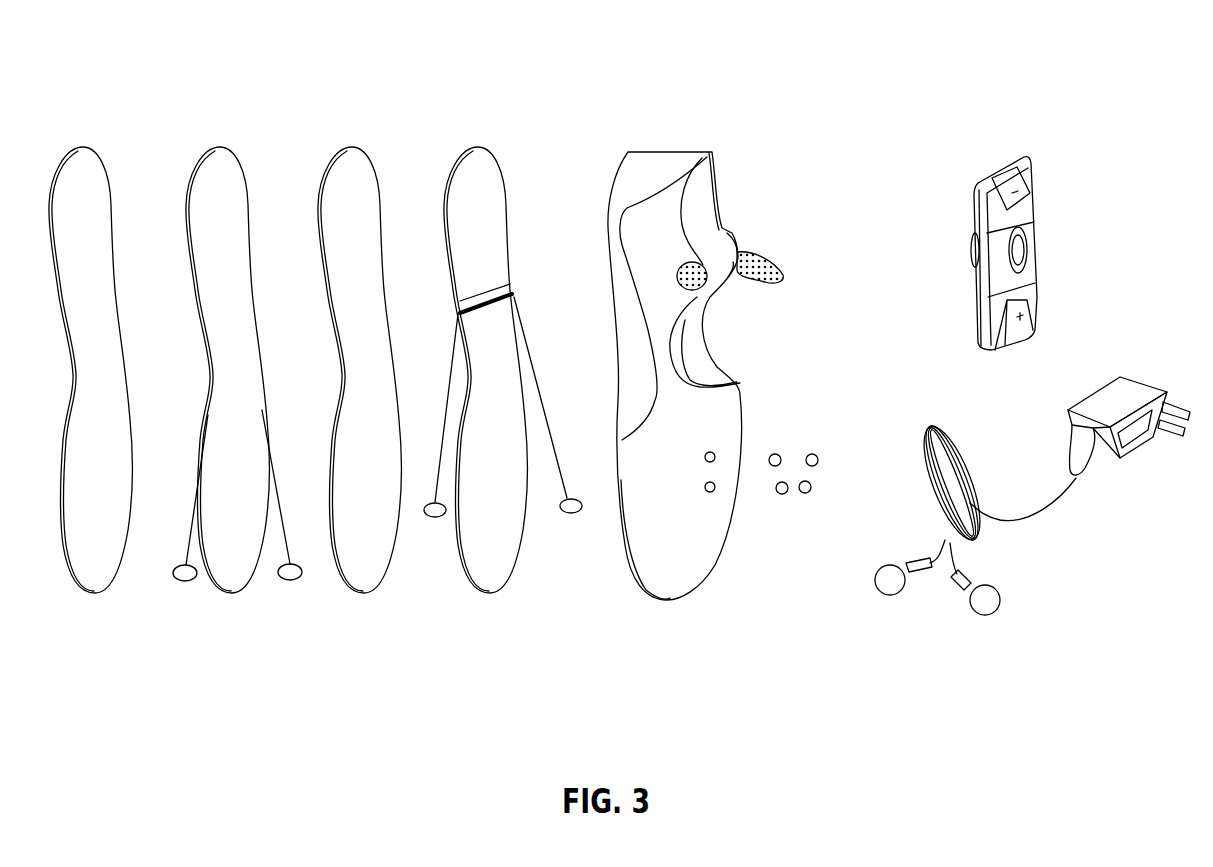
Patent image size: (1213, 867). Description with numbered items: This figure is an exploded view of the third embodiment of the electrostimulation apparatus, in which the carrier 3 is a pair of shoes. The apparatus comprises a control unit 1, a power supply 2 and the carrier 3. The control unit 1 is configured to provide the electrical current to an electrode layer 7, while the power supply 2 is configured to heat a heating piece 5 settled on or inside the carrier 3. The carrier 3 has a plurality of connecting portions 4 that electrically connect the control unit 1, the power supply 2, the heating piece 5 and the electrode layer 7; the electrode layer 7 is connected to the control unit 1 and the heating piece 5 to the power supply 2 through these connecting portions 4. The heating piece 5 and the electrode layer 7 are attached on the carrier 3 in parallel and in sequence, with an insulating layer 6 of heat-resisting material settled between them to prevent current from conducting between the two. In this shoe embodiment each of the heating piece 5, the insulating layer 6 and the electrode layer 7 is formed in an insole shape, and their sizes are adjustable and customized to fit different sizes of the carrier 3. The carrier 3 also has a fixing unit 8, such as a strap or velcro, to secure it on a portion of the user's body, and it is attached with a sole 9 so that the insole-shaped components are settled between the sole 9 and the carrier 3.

The control unit 1 is at (1023, 148).
The power supply 2 is at (1138, 383).
The carrier 3 is at (668, 147).
The connecting portions 4 is at (795, 447).
The heating piece 5 is at (225, 137).
The insulating layer 6 is at (350, 137).
The electrode layer 7 is at (478, 137).
The fixing unit 8 is at (760, 253).
The sole 9 is at (85, 137).